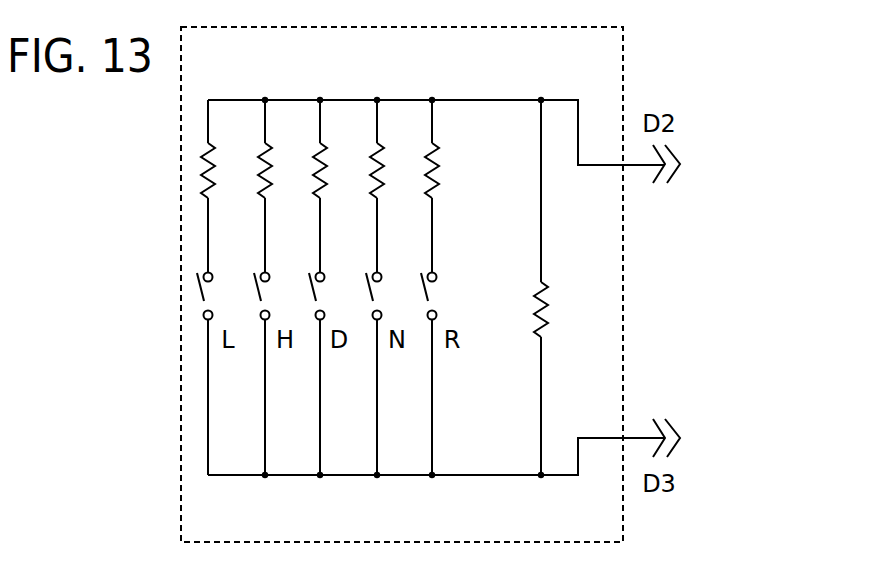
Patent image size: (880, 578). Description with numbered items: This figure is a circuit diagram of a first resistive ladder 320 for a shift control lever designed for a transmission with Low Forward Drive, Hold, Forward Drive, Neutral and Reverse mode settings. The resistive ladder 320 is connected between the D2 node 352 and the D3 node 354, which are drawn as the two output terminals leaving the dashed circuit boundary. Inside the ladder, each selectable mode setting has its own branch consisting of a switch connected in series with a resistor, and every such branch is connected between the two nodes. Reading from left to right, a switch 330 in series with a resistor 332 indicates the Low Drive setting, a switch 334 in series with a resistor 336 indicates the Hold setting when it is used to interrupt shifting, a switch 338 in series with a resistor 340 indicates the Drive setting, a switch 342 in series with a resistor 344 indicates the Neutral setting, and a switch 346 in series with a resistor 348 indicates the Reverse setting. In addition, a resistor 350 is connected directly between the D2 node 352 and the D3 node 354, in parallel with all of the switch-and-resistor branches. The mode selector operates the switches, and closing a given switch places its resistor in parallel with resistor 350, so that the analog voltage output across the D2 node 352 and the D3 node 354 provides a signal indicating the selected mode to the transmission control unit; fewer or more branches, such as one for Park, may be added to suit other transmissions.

The resistive ladder 320 is at (657, 79).
The switch 330 is at (198, 300).
The resistor 332 is at (201, 158).
The switch 334 is at (260, 298).
The resistor 336 is at (258, 150).
The switch 338 is at (315, 298).
The resistor 340 is at (316, 150).
The switch 342 is at (371, 298).
The resistor 344 is at (374, 150).
The switch 346 is at (427, 298).
The resistor 348 is at (430, 150).
The resistor 350 is at (550, 314).
The D2 node 352 is at (680, 162).
The D3 node 354 is at (680, 436).